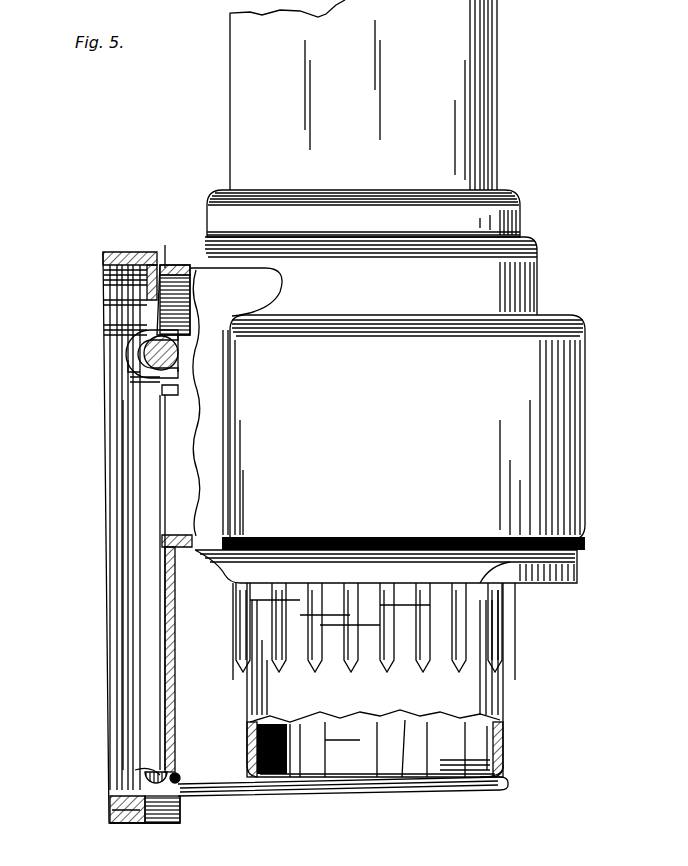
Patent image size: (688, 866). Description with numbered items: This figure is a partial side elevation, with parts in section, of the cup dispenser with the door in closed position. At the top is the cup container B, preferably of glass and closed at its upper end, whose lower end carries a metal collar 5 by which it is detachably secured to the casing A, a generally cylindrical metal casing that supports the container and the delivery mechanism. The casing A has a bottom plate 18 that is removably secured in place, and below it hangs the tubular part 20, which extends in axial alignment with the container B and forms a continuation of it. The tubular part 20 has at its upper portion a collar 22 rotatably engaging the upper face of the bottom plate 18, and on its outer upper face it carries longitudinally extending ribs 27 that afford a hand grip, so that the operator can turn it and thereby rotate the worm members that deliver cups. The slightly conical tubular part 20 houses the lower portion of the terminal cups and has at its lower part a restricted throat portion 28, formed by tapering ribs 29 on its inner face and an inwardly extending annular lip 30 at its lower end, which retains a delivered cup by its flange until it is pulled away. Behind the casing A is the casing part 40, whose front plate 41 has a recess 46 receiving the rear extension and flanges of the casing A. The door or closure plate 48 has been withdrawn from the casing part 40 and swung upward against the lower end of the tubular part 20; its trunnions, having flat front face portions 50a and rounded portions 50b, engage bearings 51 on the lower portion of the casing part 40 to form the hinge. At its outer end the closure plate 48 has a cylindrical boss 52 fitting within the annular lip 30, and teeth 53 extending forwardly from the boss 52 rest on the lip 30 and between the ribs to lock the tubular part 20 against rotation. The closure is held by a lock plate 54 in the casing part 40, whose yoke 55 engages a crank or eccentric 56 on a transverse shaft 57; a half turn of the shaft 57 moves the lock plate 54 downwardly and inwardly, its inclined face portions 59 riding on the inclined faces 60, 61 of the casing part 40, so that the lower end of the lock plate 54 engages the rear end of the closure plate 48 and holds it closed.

The metal collar 5 is at (363, 213).
The bottom plate 18 is at (358, 548).
The tubular part 20 is at (375, 680).
The collar 22 is at (186, 548).
The longitudinally extending ribs 27 is at (512, 628).
The restricted throat portion 28 is at (406, 762).
The tapering ribs 29 is at (330, 745).
The annular lip 30 is at (508, 774).
The casing part 40 is at (108, 722).
The front plate 41 is at (173, 640).
The recess 46 is at (165, 246).
The door or closure plate 48 is at (228, 790).
The flat front face portions 50a is at (135, 766).
The rounded portions 50b is at (160, 822).
The bearings 51 is at (180, 778).
The cylindrical boss 52 is at (373, 780).
The teeth 53 is at (470, 778).
The lock plate 54 is at (122, 592).
The yoke 55 is at (128, 341).
The crank or eccentric 56 is at (182, 372).
The transverse shaft 57 is at (192, 340).
The inclined face portions 59 is at (125, 820).
The inclined face 60 is at (112, 805).
The inclined face 61 is at (125, 368).
The casing A is at (403, 432).
The cup container B is at (363, 95).